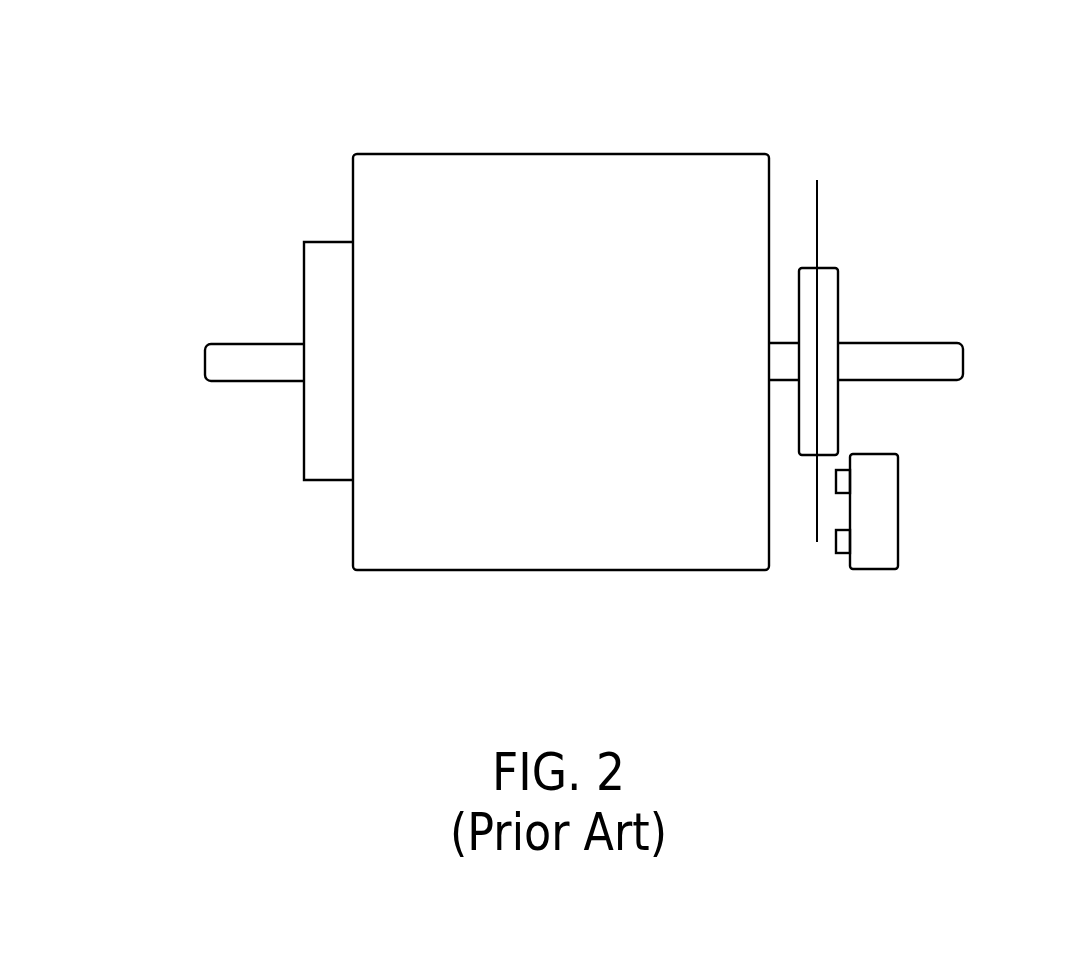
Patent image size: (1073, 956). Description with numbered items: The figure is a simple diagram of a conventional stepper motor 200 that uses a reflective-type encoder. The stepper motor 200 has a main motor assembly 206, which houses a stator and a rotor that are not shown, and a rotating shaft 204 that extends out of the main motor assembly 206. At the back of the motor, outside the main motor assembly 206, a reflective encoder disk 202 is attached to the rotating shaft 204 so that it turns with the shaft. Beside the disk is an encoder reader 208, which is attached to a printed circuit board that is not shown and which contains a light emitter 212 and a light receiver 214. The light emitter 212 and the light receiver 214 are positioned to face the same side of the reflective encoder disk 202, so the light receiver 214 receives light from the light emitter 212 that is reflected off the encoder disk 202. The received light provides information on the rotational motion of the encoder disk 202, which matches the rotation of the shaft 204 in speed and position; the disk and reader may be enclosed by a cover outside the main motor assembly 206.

The stepper motor 200 is at (729, 74).
The reflective encoder disk 202 is at (819, 220).
The rotating shaft 204 is at (965, 362).
The main motor assembly 206 is at (353, 603).
The encoder reader 208 is at (865, 570).
The light emitter 212 is at (840, 470).
The light receiver 214 is at (842, 553).